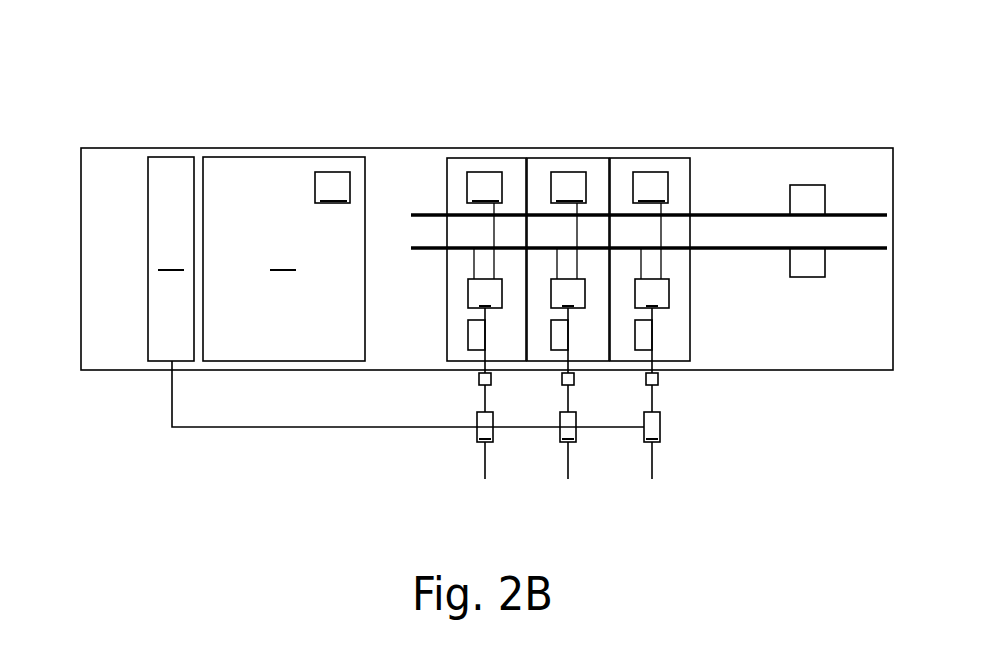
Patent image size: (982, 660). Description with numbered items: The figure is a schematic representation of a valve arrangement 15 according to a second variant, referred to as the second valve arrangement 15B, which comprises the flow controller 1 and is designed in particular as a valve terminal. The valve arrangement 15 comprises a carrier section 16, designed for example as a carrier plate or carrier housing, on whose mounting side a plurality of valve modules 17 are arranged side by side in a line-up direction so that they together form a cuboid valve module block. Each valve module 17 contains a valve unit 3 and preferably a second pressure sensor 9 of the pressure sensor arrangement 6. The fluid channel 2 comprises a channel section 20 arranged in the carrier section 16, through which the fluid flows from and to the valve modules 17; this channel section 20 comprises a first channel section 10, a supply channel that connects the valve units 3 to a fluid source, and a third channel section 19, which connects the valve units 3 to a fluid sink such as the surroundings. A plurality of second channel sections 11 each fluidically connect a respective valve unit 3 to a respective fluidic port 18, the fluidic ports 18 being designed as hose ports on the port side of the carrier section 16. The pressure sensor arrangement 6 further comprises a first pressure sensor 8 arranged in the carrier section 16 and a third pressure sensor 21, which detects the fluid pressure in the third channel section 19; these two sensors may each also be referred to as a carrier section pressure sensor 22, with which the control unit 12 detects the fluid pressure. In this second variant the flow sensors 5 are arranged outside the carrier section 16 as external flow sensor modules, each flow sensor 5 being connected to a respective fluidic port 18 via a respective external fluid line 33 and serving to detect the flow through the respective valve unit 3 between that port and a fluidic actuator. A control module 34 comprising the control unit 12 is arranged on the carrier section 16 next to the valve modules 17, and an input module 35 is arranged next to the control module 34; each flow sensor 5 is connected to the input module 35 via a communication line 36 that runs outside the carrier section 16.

The flow controller 1 is at (237, 110).
The valve arrangement 15 is at (461, 247).
The second valve arrangement 15B is at (461, 247).
The carrier section 16 is at (93, 217).
The valve module 17 is at (497, 161).
The control unit 12 is at (491, 188).
The fluid channel 2 is at (632, 244).
The first channel section 10 is at (742, 213).
The third channel section 19 is at (700, 250).
The channel section 20 is at (649, 189).
The second channel section 11 is at (482, 366).
The valve unit 3 is at (568, 294).
The pressure sensor arrangement 6 is at (634, 249).
The first pressure sensor 8 is at (810, 196).
The second pressure sensor 9 is at (473, 341).
The third pressure sensor 21 is at (807, 270).
The carrier section pressure sensor 22 is at (835, 224).
The fluidic port 18 is at (478, 380).
The external fluid line 33 is at (484, 398).
The flow sensor 5 is at (568, 445).
The control module 34 is at (284, 259).
The input module 35 is at (171, 259).
The communication line 36 is at (408, 395).